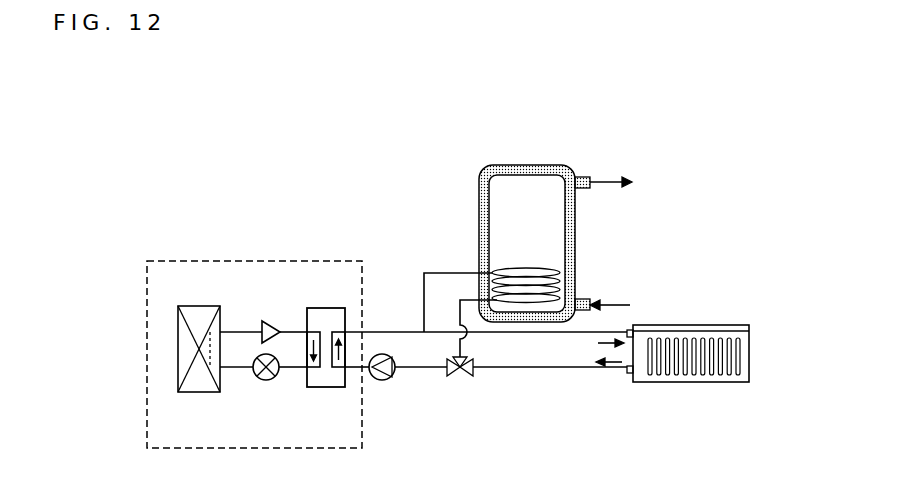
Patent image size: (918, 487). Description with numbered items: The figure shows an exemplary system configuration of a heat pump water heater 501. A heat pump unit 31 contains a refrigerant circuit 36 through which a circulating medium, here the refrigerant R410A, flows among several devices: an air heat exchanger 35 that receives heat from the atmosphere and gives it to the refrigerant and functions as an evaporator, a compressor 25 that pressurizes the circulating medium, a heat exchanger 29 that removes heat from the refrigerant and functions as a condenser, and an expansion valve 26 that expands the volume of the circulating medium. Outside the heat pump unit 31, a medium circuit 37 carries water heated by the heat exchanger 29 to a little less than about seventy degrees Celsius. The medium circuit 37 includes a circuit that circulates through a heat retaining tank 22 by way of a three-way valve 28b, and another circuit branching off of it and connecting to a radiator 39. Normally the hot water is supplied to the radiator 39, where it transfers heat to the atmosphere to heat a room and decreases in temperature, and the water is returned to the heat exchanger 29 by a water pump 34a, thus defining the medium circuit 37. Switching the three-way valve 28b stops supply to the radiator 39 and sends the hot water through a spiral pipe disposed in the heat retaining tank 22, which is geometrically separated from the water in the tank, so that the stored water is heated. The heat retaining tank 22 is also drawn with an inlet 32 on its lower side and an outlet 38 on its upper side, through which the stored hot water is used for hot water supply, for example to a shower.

The heat pump water heater 501 is at (173, 137).
The heat pump unit 31 is at (253, 261).
The heat retaining tank 22 is at (480, 176).
The hot water outlet 38 is at (600, 178).
The water inlet 32 is at (608, 302).
The medium circuit 37 is at (393, 332).
The refrigerant circuit 36 is at (247, 332).
The compressor 25 is at (270, 320).
The expansion valve 26 is at (262, 380).
The heat exchanger 29 is at (322, 308).
The air heat exchanger 35 is at (190, 392).
The water pump 34a is at (388, 380).
The three-way valve 28b is at (470, 372).
The radiator 39 is at (652, 382).